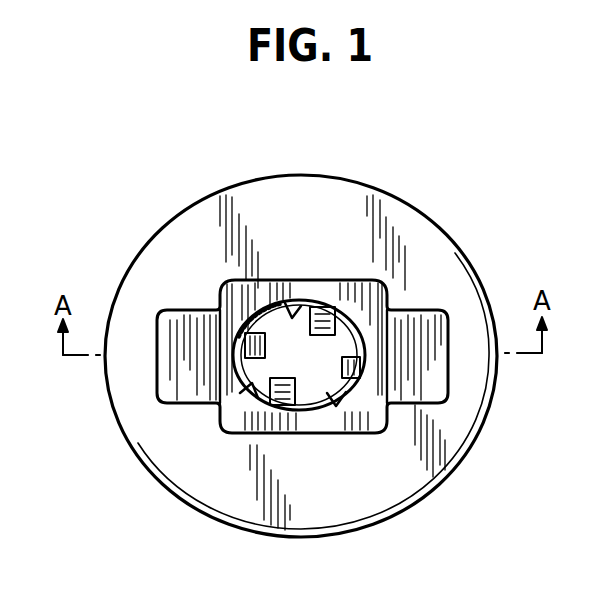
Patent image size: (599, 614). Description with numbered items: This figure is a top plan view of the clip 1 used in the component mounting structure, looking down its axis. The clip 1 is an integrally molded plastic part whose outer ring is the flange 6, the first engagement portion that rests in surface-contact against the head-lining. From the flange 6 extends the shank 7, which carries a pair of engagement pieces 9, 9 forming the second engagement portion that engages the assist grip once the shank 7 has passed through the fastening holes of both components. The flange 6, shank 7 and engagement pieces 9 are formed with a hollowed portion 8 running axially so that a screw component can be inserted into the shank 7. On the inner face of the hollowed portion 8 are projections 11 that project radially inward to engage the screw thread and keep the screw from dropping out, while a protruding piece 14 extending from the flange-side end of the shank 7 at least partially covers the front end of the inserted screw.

The clip 1 is at (439, 196).
The flange 6 is at (430, 242).
The shank 7 is at (232, 431).
The hollowed portion 8 is at (323, 358).
The engagement pieces 9 is at (163, 332).
The projection 11 is at (291, 304).
The protruding piece 14 is at (297, 391).